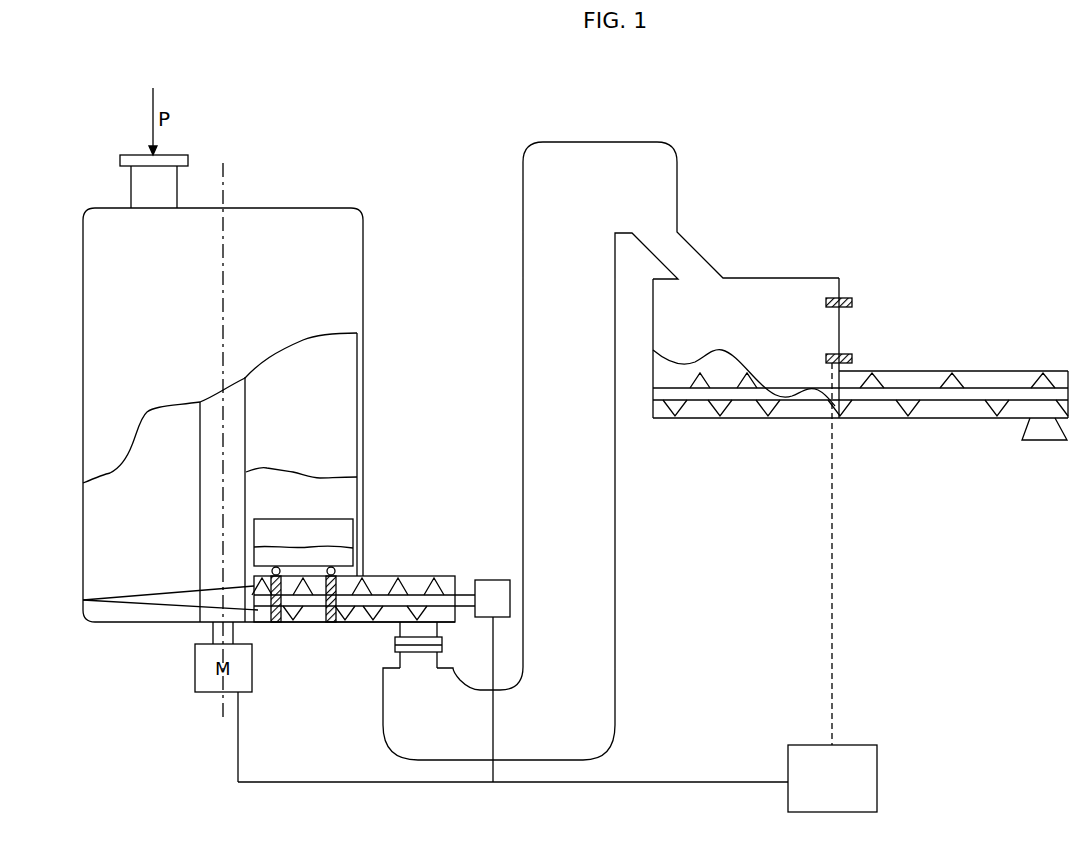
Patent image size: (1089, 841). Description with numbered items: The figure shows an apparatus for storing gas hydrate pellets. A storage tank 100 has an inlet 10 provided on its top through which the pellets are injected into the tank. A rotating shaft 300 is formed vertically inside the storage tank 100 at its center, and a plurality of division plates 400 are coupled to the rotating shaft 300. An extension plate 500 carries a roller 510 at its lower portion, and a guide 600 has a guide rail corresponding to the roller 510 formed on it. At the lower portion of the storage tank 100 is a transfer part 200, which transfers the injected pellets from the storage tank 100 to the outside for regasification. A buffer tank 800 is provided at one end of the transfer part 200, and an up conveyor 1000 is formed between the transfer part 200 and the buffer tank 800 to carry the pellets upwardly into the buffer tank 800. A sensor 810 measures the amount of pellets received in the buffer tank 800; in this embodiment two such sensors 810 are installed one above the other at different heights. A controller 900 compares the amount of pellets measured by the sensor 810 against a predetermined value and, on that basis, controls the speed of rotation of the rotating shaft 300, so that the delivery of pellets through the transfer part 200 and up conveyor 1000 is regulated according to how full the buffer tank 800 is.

The inlet 10 is at (127, 181).
The storage tank 100 is at (333, 228).
The transfer part 200 is at (365, 610).
The rotating shaft 300 is at (357, 477).
The division plate 400 is at (357, 421).
The extension plate 500 is at (353, 550).
The roller 510 is at (336, 572).
The guide 600 is at (318, 625).
The buffer tank 800 is at (770, 278).
The sensor 810 is at (853, 301).
The controller 900 is at (877, 778).
The up conveyor 1000 is at (615, 522).